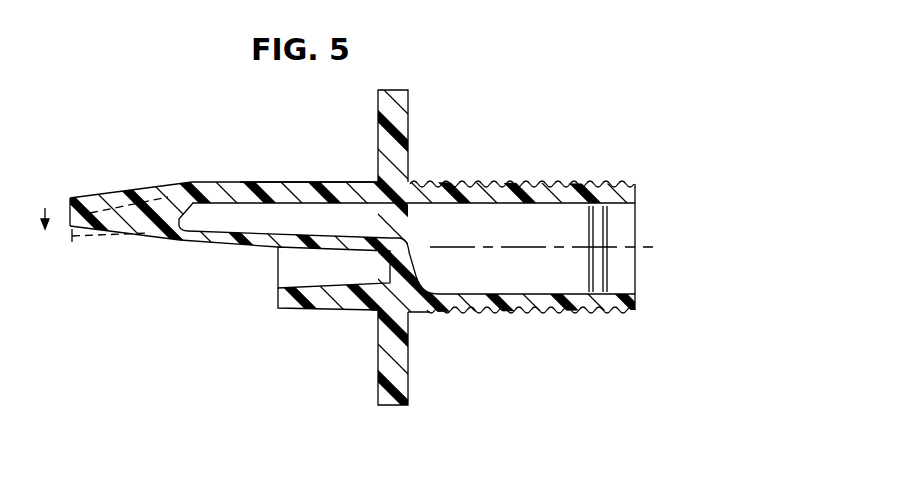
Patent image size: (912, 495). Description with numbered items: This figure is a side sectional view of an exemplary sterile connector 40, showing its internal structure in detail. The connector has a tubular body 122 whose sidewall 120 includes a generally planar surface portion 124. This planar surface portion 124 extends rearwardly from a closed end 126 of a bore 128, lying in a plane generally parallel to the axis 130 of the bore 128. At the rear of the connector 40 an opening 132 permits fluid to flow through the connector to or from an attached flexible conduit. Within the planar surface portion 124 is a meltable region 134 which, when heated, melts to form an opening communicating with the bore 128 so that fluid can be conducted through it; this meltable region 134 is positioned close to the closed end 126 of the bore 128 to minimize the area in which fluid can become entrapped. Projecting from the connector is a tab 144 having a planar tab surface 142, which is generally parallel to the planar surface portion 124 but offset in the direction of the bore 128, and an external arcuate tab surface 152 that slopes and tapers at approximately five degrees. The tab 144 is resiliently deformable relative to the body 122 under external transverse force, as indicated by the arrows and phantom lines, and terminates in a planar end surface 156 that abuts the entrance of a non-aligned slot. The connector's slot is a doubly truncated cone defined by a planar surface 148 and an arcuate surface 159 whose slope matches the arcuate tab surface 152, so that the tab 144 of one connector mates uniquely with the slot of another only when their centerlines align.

The connector 40 is at (445, 144).
The sidewall 120 is at (340, 191).
The tubular body 122 is at (303, 180).
The planar surface portion 124 is at (291, 243).
The closed end 126 is at (186, 232).
The bore 128 is at (545, 259).
The axis 130 is at (556, 246).
The opening 132 is at (636, 221).
The meltable region 134 is at (261, 240).
The planar tab surface 142 is at (137, 232).
The tab 144 is at (108, 198).
The planar surface 148 is at (351, 252).
The external arcuate tab surface 152 is at (147, 196).
The planar end surface 156 is at (71, 216).
The arcuate surface 159 is at (337, 286).